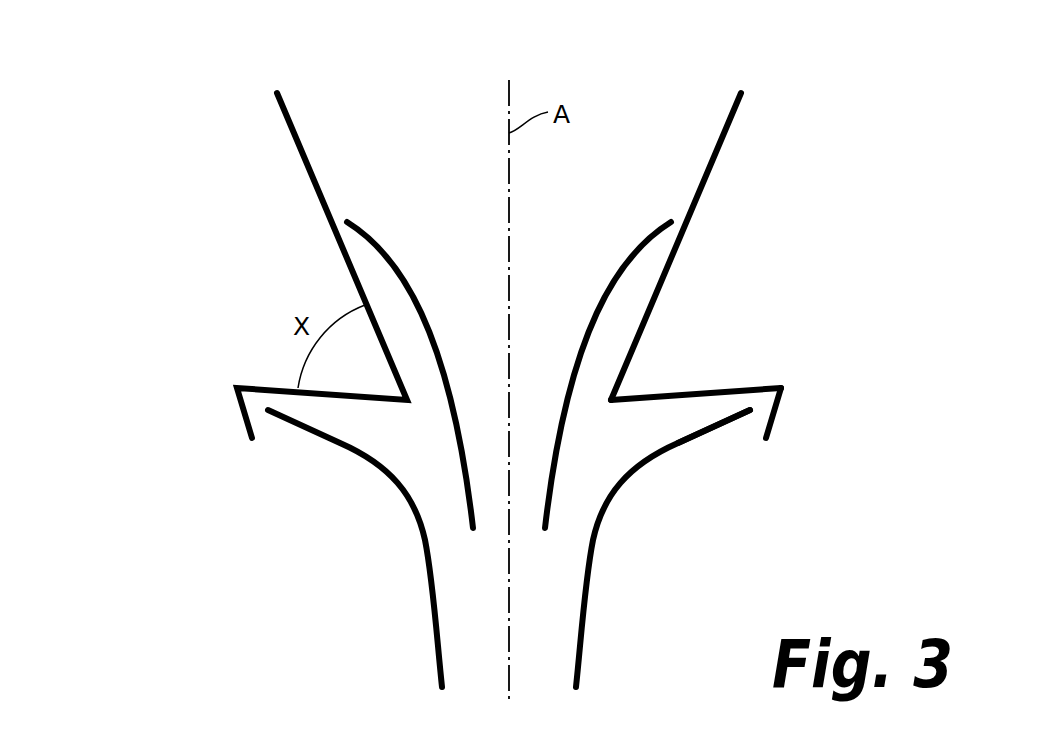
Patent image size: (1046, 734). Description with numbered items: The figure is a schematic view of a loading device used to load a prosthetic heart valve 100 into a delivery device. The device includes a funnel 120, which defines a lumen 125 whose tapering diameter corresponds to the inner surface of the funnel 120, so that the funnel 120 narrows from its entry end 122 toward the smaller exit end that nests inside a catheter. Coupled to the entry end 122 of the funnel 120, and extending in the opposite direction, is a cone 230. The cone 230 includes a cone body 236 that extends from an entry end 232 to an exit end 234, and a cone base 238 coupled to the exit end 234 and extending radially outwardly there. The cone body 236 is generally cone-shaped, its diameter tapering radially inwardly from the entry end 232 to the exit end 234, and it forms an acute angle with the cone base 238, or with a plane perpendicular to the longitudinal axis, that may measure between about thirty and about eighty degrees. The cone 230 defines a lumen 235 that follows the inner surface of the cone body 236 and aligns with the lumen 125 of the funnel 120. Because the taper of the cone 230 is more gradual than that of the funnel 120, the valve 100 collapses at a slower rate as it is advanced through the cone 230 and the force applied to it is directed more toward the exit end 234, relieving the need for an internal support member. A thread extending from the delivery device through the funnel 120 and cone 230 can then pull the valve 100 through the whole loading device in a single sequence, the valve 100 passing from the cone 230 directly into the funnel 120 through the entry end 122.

The prosthetic heart valve 100 is at (557, 286).
The funnel 120 is at (452, 579).
The entry end 122 is at (730, 422).
The lumen 125 is at (538, 617).
The cone 230 is at (340, 262).
The entry end 232 is at (741, 95).
The exit end 234 is at (770, 435).
The lumen 235 is at (493, 177).
The cone body 236 is at (690, 218).
The cone base 238 is at (778, 410).